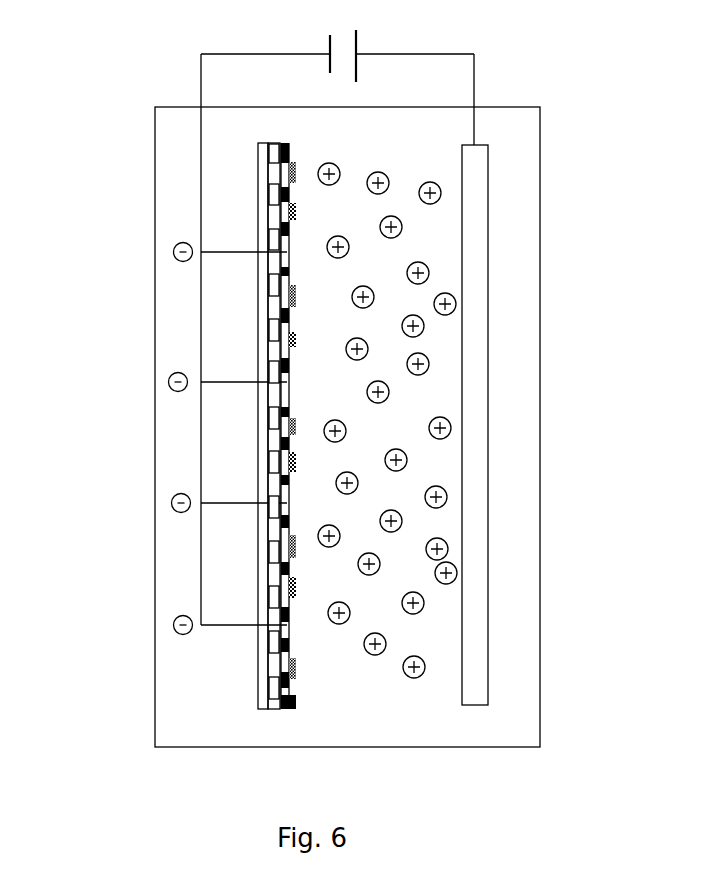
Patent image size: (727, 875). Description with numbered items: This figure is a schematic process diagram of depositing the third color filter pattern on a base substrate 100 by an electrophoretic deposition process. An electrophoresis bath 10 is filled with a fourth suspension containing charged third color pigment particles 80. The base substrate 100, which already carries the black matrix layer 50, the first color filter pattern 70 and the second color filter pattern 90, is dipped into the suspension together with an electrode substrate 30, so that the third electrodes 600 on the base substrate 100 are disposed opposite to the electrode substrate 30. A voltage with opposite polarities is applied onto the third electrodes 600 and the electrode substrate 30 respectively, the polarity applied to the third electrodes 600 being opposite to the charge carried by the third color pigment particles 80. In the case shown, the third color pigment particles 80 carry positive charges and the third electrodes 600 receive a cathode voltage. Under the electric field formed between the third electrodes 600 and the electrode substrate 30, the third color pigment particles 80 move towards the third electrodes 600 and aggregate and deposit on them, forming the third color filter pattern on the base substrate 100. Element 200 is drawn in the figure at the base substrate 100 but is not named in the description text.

The electrophoresis bath 10 is at (162, 458).
The electrode substrate 30 is at (473, 287).
The black matrix layer 50 is at (293, 693).
The first color filter pattern 70 is at (298, 670).
The third color pigment particles 80 is at (443, 187).
The second color filter pattern 90 is at (289, 222).
The base substrate 100 is at (267, 682).
The insulating layer 200 is at (273, 692).
The third electrodes 600 is at (284, 262).